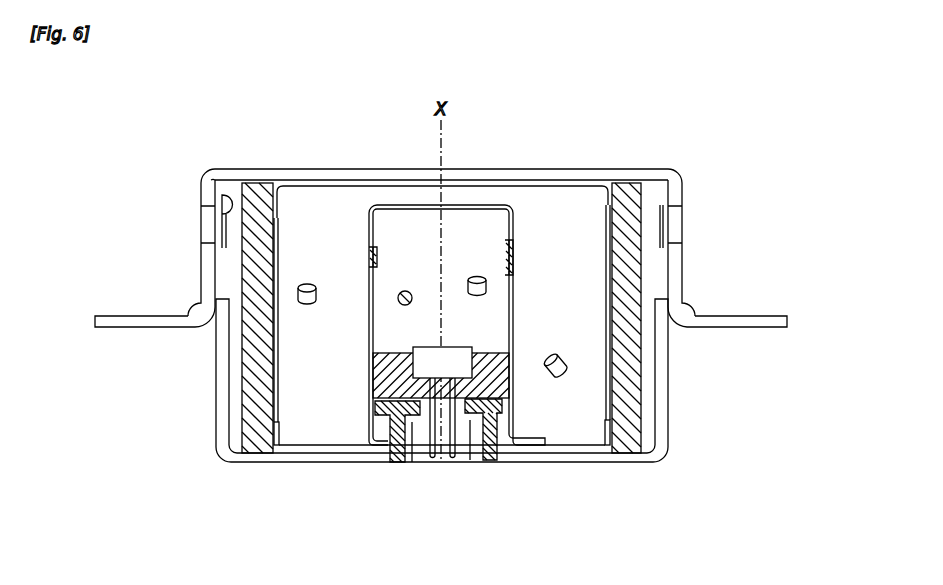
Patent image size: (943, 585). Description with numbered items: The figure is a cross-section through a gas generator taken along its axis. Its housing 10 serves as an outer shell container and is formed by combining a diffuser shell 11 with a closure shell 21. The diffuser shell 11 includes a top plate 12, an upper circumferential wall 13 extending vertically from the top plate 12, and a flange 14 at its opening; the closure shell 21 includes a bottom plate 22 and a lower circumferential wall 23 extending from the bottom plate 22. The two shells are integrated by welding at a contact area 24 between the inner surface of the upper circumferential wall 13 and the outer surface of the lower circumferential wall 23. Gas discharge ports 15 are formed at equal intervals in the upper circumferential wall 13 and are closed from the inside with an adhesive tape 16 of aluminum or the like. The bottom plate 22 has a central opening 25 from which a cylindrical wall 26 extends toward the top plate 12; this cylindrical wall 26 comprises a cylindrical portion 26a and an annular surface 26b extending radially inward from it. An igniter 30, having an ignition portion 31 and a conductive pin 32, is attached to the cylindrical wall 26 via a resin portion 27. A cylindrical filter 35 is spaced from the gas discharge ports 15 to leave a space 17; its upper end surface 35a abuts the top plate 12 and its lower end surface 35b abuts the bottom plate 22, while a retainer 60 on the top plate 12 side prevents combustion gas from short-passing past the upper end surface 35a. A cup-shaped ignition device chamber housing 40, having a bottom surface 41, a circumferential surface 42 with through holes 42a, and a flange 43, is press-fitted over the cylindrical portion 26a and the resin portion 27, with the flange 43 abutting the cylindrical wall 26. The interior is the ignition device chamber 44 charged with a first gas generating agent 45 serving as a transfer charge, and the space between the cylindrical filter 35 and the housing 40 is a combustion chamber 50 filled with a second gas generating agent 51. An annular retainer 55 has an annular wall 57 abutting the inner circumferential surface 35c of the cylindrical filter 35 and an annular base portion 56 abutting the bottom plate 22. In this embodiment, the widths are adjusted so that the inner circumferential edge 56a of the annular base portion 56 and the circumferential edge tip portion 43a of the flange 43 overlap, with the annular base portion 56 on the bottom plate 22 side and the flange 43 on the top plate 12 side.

The housing 10 is at (458, 309).
The diffuser shell 11 is at (437, 251).
The top plate 12 is at (303, 169).
The upper circumferential wall 13 is at (200, 273).
The flange 14 is at (116, 315).
The gas discharge ports 15 is at (205, 227).
The adhesive tape 16 is at (222, 199).
The space 17 is at (657, 265).
The closure shell 21 is at (489, 400).
The bottom plate 22 is at (565, 462).
The lower circumferential wall 23 is at (215, 421).
The contact area 24 is at (196, 323).
The opening 25 is at (471, 453).
The cylindrical wall 26 is at (430, 477).
The cylindrical portion 26a is at (392, 463).
The annular surface 26b is at (412, 463).
The resin portion 27 is at (373, 369).
The igniter 30 is at (444, 342).
The ignition portion 31 is at (458, 358).
The conductive pin 32 is at (441, 462).
The cylindrical filter 35 is at (493, 318).
The upper end surface 35a is at (626, 183).
The lower end surface 35b is at (632, 455).
The inner circumferential surface 35c is at (278, 381).
The ignition device chamber housing 40 is at (457, 330).
The bottom surface 41 is at (476, 205).
The circumferential surface 42 is at (515, 320).
The through holes 42a is at (514, 258).
The flange 43 is at (529, 437).
The circumferential edge tip portion 43a is at (548, 447).
The ignition device chamber 44 is at (406, 237).
The first gas generating agent 45 is at (405, 291).
The combustion chamber 50 is at (311, 273).
The second gas generating agent 51 is at (557, 354).
The annular retainer 55 is at (410, 371).
The annular base portion 56 is at (308, 453).
The inner circumferential edge 56a is at (506, 452).
The annular wall 57 is at (266, 453).
The retainer 60 is at (536, 187).